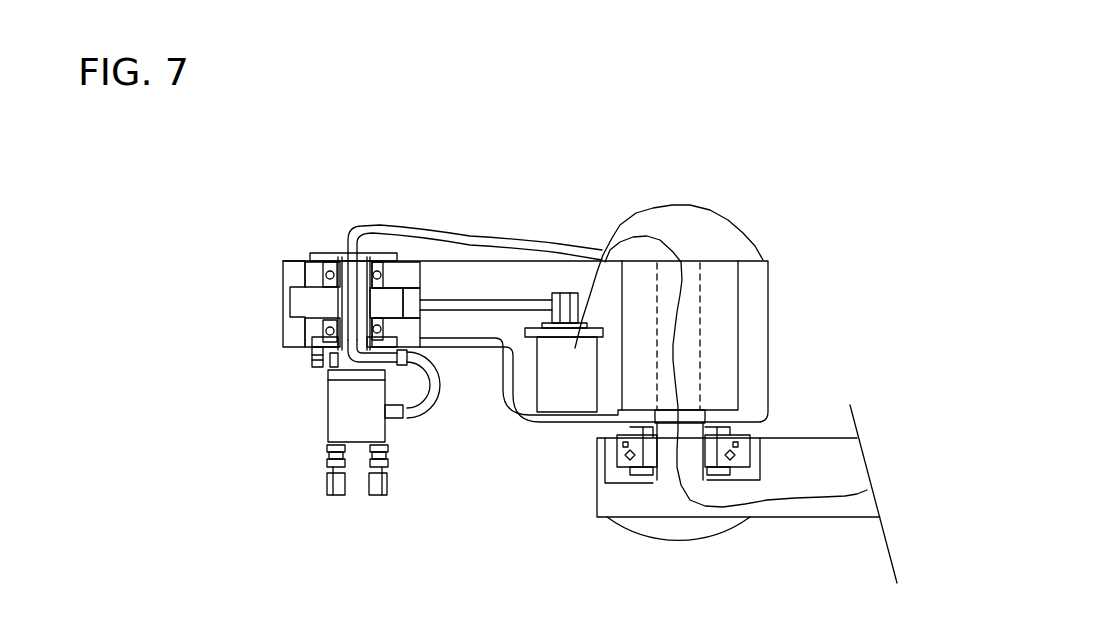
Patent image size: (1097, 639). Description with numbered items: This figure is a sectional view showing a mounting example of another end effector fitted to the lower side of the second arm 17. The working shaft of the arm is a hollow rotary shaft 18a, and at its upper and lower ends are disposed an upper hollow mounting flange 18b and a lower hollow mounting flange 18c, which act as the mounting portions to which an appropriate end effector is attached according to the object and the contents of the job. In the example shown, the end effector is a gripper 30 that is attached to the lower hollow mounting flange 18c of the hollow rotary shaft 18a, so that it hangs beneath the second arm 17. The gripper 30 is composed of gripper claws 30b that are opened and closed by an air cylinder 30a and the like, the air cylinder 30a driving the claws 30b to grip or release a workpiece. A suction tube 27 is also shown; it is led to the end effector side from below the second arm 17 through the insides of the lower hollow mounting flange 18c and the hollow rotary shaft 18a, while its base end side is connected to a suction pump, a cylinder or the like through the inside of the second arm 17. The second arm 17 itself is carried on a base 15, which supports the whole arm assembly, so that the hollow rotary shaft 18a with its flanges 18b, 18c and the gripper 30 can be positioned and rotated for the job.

The base 15 is at (747, 421).
The second arm 17 is at (511, 262).
The hollow rotary shaft 18a is at (254, 303).
The upper hollow mounting flange 18b is at (293, 200).
The lower hollow mounting flange 18c is at (247, 377).
The suction tube 27 is at (475, 226).
The gripper 30 is at (343, 463).
The air cylinder 30a is at (317, 509).
The gripper claws 30b is at (428, 447).